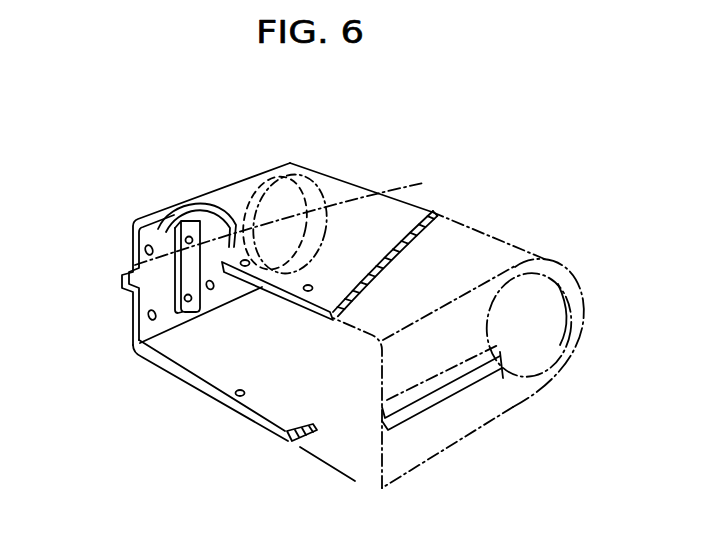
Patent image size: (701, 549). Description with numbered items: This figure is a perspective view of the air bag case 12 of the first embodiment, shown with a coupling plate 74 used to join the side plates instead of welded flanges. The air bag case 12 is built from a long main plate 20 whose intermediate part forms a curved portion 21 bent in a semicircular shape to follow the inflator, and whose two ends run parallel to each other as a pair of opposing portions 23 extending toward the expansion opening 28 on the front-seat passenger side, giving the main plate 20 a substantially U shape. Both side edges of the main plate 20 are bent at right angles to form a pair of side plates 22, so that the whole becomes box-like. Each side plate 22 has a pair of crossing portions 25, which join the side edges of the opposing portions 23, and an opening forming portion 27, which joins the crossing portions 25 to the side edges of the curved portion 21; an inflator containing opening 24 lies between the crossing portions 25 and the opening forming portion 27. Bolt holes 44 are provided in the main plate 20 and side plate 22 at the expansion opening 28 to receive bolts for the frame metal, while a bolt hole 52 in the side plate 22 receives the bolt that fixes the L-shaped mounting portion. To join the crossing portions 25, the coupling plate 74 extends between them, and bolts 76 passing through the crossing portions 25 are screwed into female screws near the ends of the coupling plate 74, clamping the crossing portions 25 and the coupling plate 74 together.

The air bag case 12 is at (364, 170).
The main plate 20 is at (340, 174).
The curved portion 21 is at (375, 191).
The side plates 22 is at (126, 345).
The opposing portions 23 is at (378, 257).
The inflator containing opening 24 is at (262, 170).
The crossing portions 25 is at (129, 268).
The opening forming portion 27 is at (423, 183).
The expansion opening 28 is at (283, 422).
The bolt holes 44 is at (239, 396).
The bolt hole 52 is at (214, 288).
The coupling plate 74 is at (186, 331).
The bolts 76 is at (182, 221).